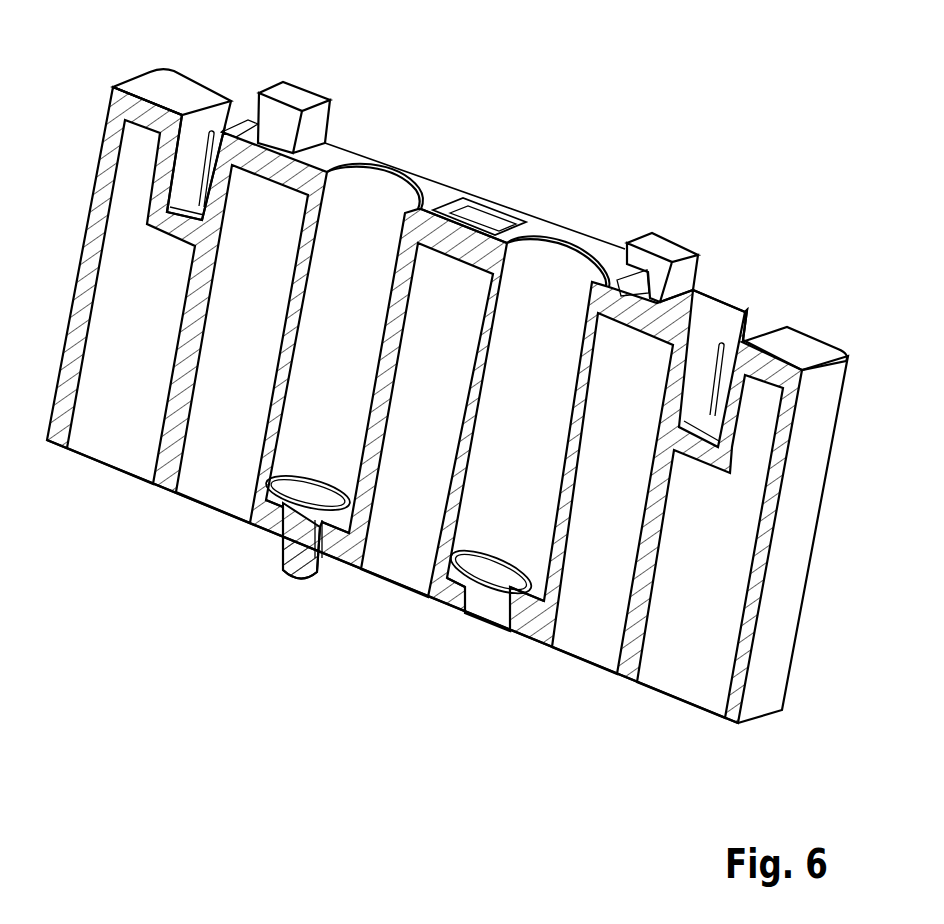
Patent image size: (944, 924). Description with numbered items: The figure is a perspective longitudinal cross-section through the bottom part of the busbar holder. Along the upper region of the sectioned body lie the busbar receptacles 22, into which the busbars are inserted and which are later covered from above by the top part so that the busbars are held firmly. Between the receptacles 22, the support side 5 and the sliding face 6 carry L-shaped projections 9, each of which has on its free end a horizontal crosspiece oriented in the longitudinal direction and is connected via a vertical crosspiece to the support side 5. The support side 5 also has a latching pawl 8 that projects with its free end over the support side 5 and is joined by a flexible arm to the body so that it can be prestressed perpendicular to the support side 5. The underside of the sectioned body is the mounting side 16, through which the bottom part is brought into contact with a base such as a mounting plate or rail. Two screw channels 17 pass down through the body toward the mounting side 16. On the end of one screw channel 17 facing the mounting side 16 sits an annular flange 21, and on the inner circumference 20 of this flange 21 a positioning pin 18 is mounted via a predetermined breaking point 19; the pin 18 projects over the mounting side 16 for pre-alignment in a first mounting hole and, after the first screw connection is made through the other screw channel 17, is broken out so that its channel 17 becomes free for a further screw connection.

The support side 5 is at (355, 126).
The sliding face 6 is at (178, 96).
The latching pawl 8 is at (494, 215).
The projections 9 is at (305, 88).
The mounting side 16 is at (157, 497).
The screw channel 17 is at (373, 198).
The positioning pin 18 is at (292, 581).
The predetermined breaking point 19 is at (338, 562).
The inner circumference 20 is at (279, 546).
The annular flange 21 is at (258, 523).
The busbar receptacle 22 is at (239, 114).